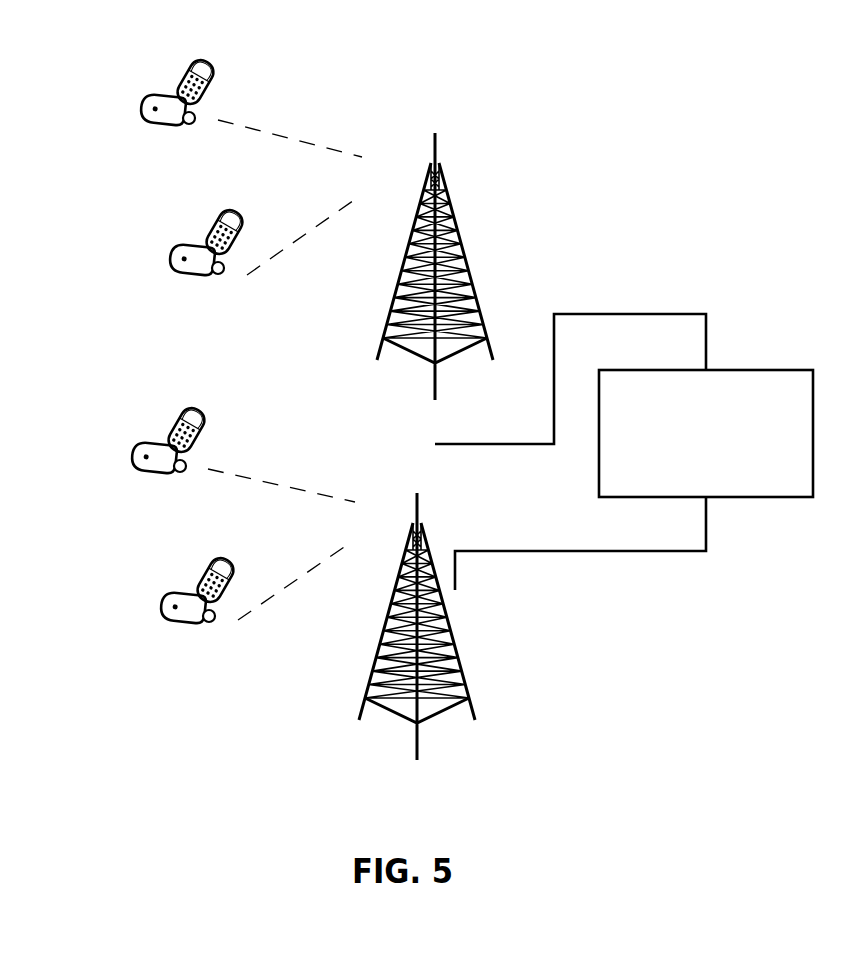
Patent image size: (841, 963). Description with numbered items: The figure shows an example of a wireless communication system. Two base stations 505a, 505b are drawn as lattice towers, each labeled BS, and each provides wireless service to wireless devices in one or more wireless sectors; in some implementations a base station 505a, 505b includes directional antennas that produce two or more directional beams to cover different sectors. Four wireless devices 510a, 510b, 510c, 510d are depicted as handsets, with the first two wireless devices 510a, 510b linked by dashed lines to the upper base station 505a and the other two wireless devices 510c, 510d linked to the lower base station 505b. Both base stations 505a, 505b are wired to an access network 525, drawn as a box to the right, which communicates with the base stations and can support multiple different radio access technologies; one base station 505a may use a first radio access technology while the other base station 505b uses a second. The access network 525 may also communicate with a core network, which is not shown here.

The base station 505a is at (447, 215).
The base station 505b is at (425, 540).
The wireless device 510a is at (158, 71).
The wireless device 510b is at (187, 223).
The wireless device 510c is at (148, 421).
The wireless device 510d is at (178, 571).
The access network 525 is at (612, 368).